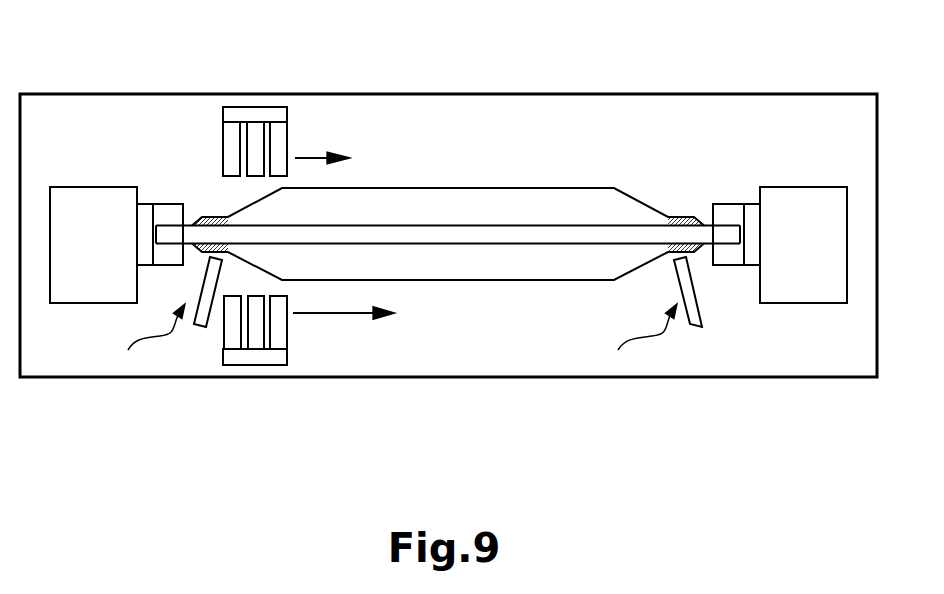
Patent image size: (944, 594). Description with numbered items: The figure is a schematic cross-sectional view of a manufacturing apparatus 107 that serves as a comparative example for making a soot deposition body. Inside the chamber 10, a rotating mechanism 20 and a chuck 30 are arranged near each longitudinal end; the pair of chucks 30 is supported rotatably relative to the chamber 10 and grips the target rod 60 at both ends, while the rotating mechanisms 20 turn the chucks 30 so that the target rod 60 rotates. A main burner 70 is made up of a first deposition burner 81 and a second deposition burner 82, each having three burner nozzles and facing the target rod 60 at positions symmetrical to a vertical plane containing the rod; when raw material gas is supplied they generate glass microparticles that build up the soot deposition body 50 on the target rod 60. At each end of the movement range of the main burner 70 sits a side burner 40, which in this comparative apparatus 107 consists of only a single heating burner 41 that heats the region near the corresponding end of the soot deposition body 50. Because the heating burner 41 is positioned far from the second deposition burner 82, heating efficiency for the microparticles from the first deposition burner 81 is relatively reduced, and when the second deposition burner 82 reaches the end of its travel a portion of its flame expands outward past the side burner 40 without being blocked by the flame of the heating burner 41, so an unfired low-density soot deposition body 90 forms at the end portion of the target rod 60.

The manufacturing apparatus 107 is at (68, 50).
The chamber 10 is at (598, 93).
The rotating mechanism 20 is at (92, 186).
The chuck 30 is at (169, 203).
The side burner 40 is at (391, 342).
The heating burner 41 is at (200, 327).
The soot deposition body 50 is at (510, 187).
The target rod 60 is at (455, 224).
The main burner 70 is at (276, 93).
The first deposition burner 81 is at (288, 328).
The second deposition burner 82 is at (288, 145).
The low-density soot deposition body 90 is at (214, 215).